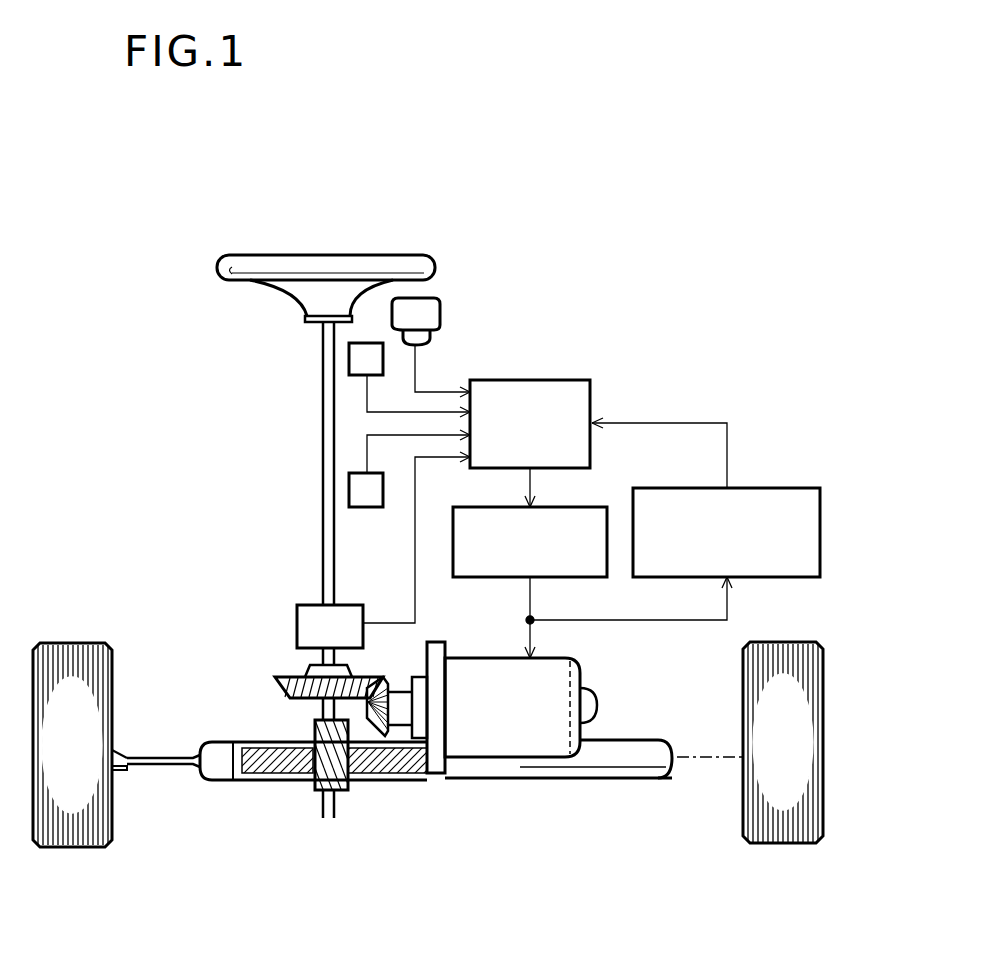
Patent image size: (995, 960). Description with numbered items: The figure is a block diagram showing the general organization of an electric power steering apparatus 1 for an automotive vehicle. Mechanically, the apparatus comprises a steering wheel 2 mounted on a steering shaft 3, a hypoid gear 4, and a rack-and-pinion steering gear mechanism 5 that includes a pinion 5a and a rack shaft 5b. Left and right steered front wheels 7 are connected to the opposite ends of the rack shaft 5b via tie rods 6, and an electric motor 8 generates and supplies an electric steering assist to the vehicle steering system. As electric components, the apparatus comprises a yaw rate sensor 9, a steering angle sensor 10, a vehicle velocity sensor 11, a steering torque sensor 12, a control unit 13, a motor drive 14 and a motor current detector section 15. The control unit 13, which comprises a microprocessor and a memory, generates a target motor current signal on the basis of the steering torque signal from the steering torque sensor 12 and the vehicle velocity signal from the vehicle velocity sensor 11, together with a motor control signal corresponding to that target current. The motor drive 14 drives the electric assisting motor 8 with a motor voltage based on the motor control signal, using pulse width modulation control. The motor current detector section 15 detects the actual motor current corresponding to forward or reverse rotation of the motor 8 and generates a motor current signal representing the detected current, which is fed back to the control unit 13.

The electric power steering apparatus 1 is at (338, 192).
The steering wheel 2 is at (372, 255).
The steering shaft 3 is at (322, 463).
The hypoid gear 4 is at (386, 731).
The rack-and-pinion steering gear mechanism 5 is at (302, 790).
The pinion 5a is at (348, 788).
The rack shaft 5b is at (620, 762).
The tie rods 6 is at (153, 767).
The steered front wheels 7 is at (73, 643).
The electric motor 8 is at (547, 682).
The yaw rate sensor 9 is at (352, 507).
The steering angle sensor 10 is at (352, 378).
The vehicle velocity sensor 11 is at (426, 309).
The steering torque sensor 12 is at (297, 625).
The control unit 13 is at (547, 380).
The motor drive 14 is at (498, 578).
The motor current detector section 15 is at (780, 488).